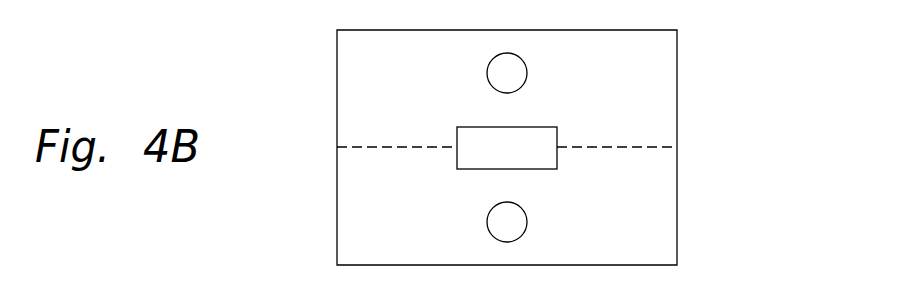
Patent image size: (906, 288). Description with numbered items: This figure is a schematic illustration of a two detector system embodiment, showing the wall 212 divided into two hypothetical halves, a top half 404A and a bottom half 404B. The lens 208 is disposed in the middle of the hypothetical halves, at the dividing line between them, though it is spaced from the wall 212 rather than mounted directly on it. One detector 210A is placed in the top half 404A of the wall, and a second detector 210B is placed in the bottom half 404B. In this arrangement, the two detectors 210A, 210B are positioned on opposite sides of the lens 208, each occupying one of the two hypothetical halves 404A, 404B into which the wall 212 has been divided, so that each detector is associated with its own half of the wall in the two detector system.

The wall 212 is at (573, 147).
The top half 404A is at (442, 104).
The bottom half 404B is at (442, 222).
The lens 208 is at (527, 160).
The first detector 210A is at (527, 73).
The second detector 210B is at (527, 221).